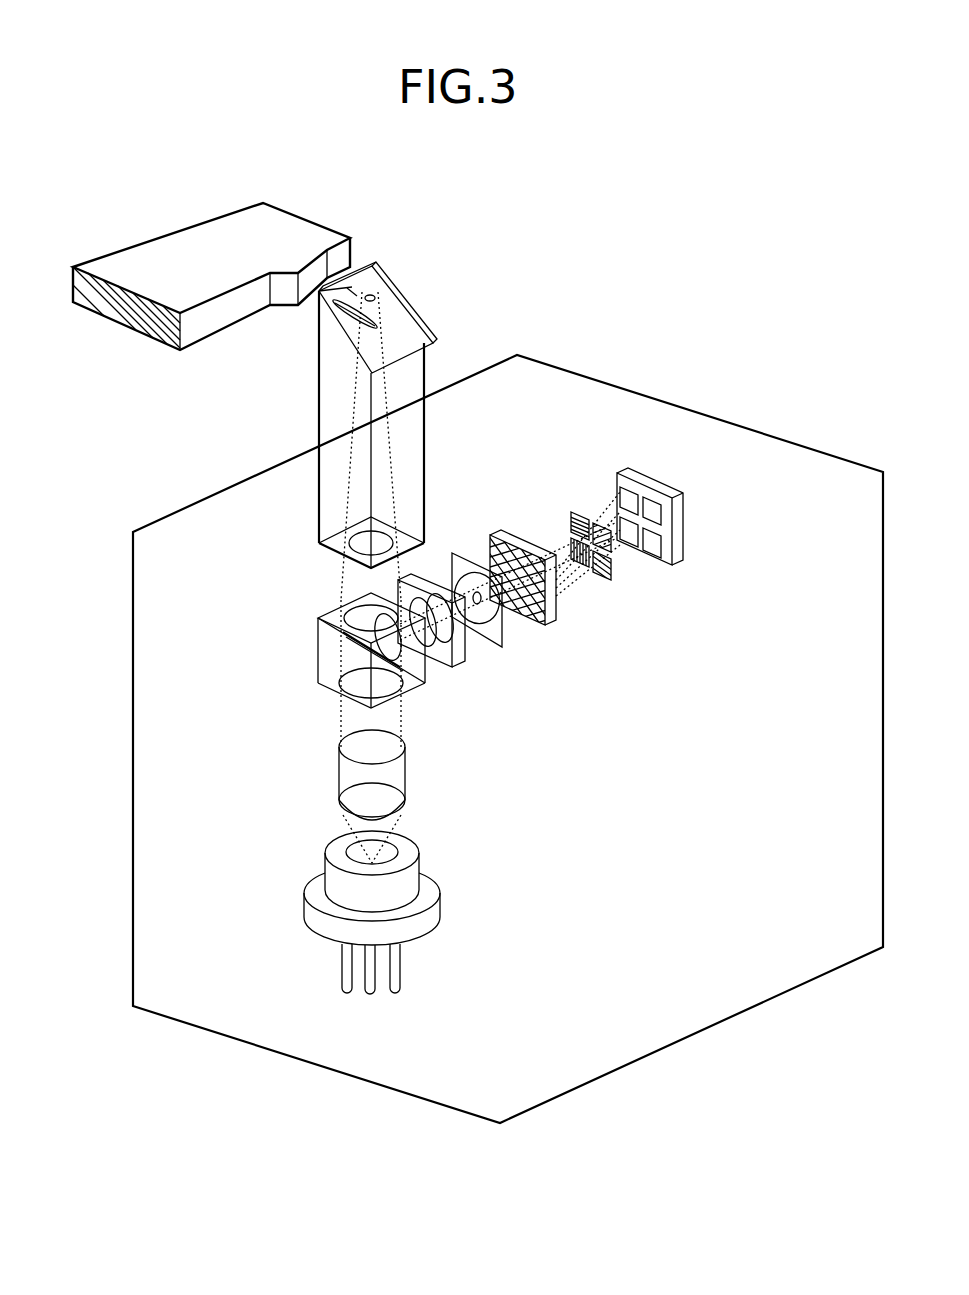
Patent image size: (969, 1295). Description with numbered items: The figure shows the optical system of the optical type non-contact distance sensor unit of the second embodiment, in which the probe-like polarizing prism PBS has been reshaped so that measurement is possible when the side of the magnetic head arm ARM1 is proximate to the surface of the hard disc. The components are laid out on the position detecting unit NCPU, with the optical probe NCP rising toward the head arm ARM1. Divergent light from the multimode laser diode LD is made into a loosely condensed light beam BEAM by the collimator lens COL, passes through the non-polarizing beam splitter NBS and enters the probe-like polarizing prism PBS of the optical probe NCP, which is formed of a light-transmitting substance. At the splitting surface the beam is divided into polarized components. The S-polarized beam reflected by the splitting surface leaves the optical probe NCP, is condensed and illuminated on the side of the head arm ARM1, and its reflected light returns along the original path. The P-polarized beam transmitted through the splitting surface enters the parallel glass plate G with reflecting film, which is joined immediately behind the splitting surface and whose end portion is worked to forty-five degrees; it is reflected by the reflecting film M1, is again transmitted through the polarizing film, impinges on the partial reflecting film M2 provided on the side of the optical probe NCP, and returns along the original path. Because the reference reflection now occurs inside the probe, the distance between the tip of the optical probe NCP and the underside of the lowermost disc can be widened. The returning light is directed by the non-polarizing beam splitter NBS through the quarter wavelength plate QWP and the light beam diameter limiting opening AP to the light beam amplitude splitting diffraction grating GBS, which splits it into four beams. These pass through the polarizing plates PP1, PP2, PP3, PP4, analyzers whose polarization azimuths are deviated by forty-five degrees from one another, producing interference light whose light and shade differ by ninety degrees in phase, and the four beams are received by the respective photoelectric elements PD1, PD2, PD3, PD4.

The position detecting unit NCPU is at (690, 410).
The magnetic head arm ARM1 is at (300, 232).
The probe-like polarizing prism PBS is at (337, 330).
The optical probe NCP is at (428, 372).
The parallel glass plate with reflecting film G is at (400, 335).
The reflecting film M1 is at (395, 287).
The partial reflecting film M2 is at (376, 290).
The light beam BEAM is at (340, 715).
The non-polarizing beam splitter NBS is at (318, 650).
The quarter wavelength plate QWP is at (440, 680).
The light beam diameter limiting opening AP is at (470, 645).
The light beam amplitude splitting diffraction grating GBS is at (520, 628).
The polarizing plate PP1 is at (600, 575).
The polarizing plate PP2 is at (618, 570).
The polarizing plate PP3 is at (578, 512).
The polarizing plate PP4 is at (568, 534).
The photoelectric element PD1 is at (676, 558).
The photoelectric element PD2 is at (655, 500).
The photoelectric element PD3 is at (624, 480).
The photoelectric element PD4 is at (614, 480).
The collimator lens COL is at (338, 776).
The multimode laser diode LD is at (326, 870).